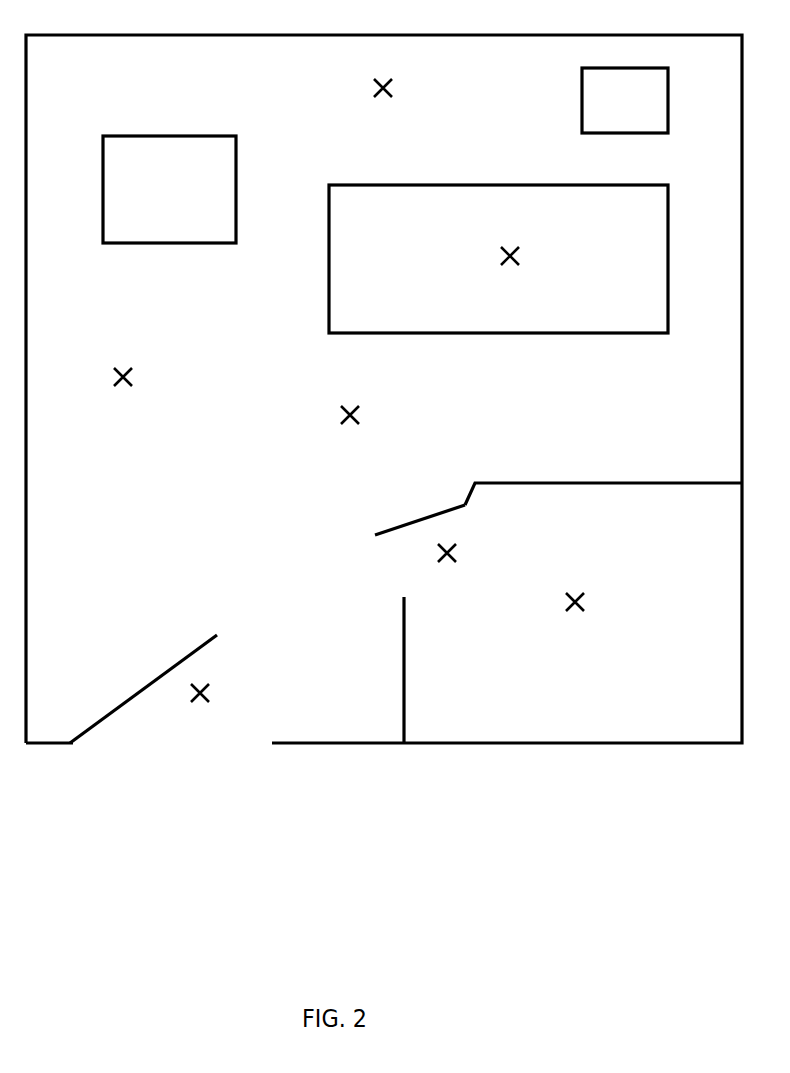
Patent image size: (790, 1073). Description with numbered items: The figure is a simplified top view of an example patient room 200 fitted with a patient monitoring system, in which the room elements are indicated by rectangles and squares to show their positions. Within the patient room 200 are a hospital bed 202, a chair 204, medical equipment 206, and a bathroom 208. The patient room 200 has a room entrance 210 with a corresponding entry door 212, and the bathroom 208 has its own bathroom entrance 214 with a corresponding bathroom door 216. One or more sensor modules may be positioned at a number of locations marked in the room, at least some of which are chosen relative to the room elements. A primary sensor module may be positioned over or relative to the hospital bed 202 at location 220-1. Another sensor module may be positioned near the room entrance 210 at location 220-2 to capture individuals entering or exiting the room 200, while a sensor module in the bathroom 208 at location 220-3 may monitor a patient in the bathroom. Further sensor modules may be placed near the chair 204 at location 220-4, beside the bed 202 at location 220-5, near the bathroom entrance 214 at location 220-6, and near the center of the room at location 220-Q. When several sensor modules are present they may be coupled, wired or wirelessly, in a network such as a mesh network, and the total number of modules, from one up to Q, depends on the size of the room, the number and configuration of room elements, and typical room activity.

The patient room 200 is at (331, 50).
The hospital bed 202 is at (580, 334).
The chair 204 is at (160, 244).
The medical equipment 206 is at (668, 96).
The bathroom 208 is at (607, 494).
The room entrance 210 is at (172, 748).
The entry door 212 is at (115, 696).
The bathroom entrance 214 is at (398, 563).
The bathroom door 216 is at (438, 505).
The location 220-1 is at (507, 248).
The location 220-2 is at (233, 679).
The location 220-3 is at (606, 582).
The location 220-4 is at (158, 362).
The location 220-5 is at (390, 90).
The location 220-6 is at (480, 572).
The location 220-Q is at (384, 401).